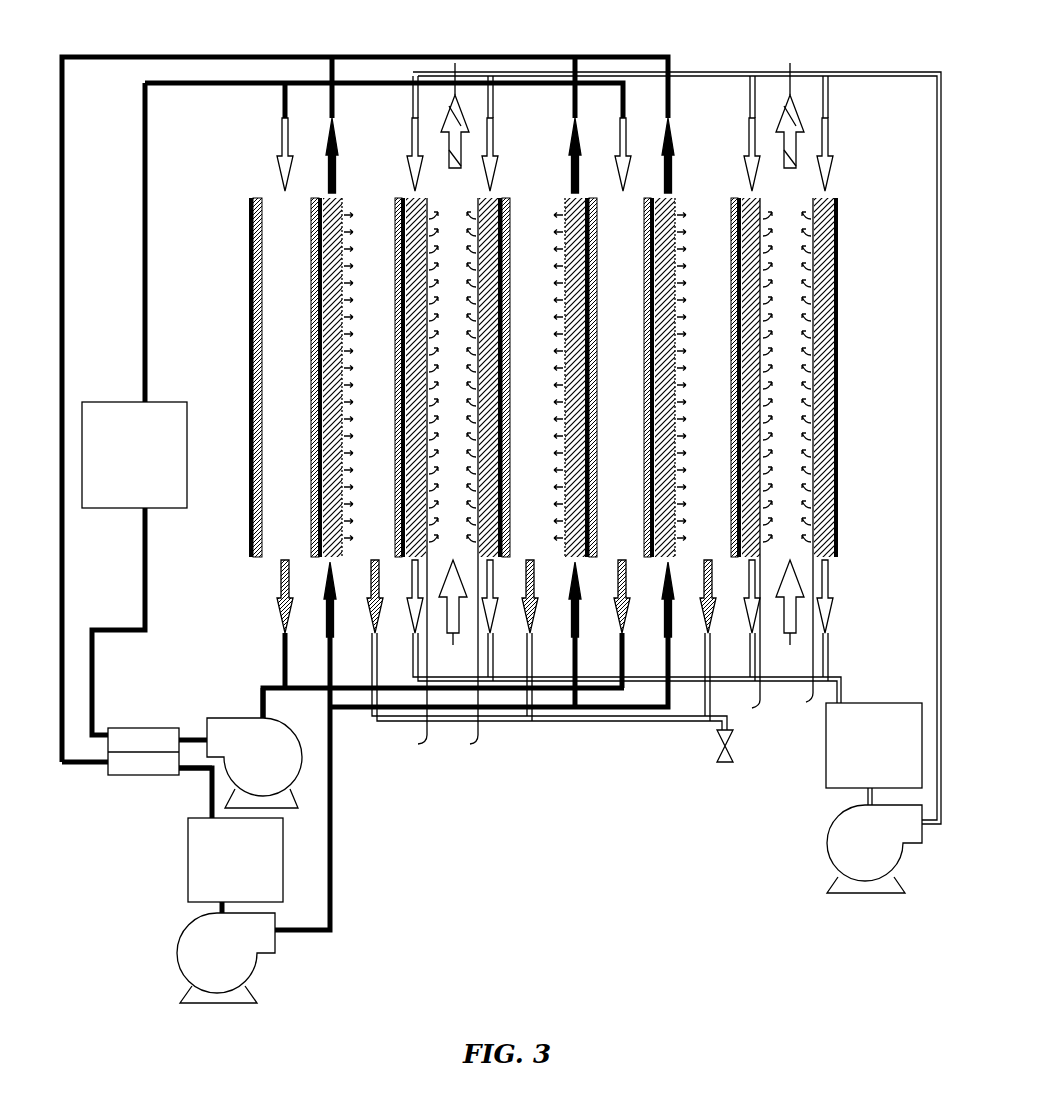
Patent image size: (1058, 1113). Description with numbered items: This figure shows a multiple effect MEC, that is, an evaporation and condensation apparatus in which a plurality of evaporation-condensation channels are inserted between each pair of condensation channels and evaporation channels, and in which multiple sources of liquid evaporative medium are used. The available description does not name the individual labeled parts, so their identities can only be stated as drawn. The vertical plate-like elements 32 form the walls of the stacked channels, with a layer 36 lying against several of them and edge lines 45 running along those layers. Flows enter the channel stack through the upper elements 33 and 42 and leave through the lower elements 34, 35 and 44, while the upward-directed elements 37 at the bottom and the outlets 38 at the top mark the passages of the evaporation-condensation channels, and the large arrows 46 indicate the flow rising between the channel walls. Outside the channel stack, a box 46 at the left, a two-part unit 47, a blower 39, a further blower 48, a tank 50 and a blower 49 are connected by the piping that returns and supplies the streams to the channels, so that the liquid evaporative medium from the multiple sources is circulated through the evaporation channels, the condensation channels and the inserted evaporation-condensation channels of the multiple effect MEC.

The plate 32 is at (250, 196).
The first inlet 33 is at (281, 125).
The first outlet 34 is at (282, 618).
The second inlet 35 is at (334, 562).
The porous layer 36 is at (337, 197).
The purge outlet 37 is at (619, 617).
The purge gas outlet 38 is at (452, 62).
The blower 39 is at (254, 748).
The gas inlet 42 is at (412, 192).
The liquid outlet 44 is at (374, 620).
The screen 45 is at (604, 481).
The heat exchanger 46 is at (443, 409).
The heat exchanger 47 is at (140, 772).
The blower 48 is at (226, 958).
The blower 49 is at (874, 849).
The tank 50 is at (874, 754).